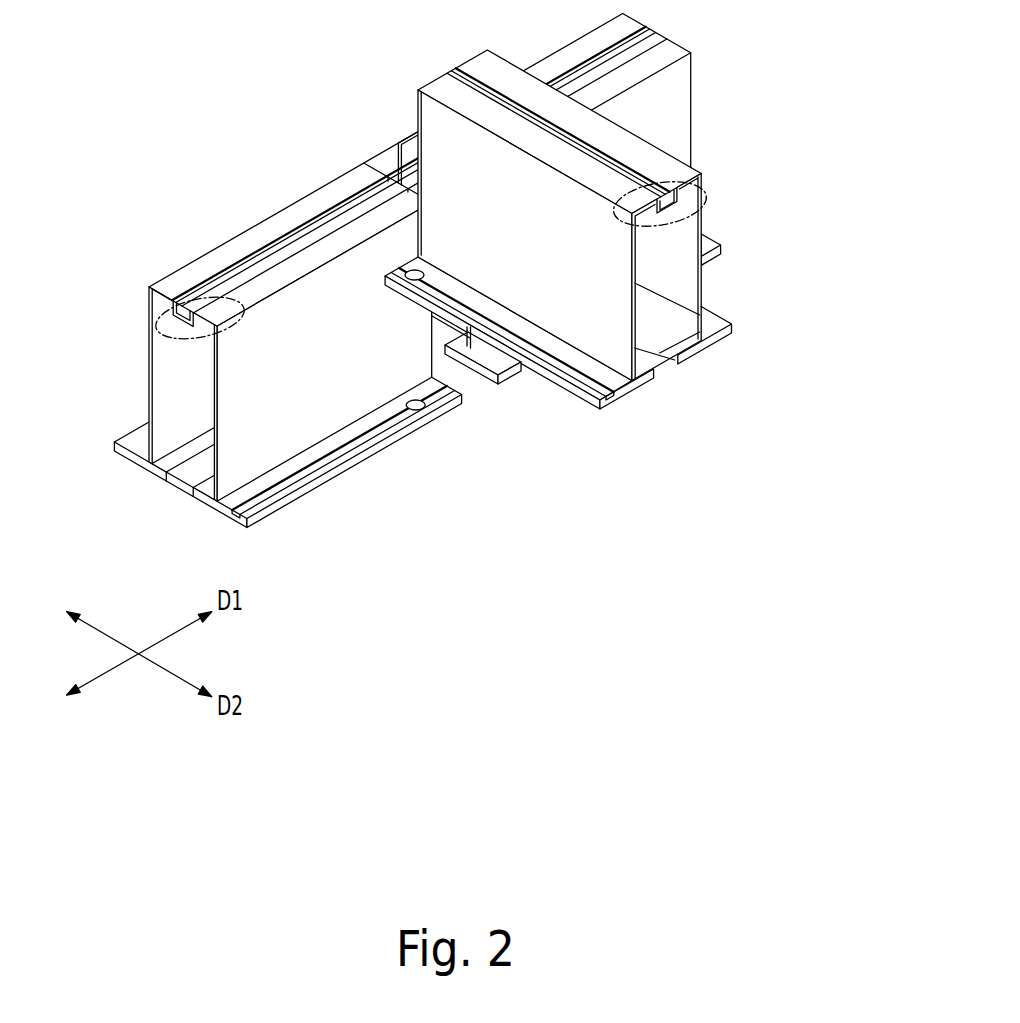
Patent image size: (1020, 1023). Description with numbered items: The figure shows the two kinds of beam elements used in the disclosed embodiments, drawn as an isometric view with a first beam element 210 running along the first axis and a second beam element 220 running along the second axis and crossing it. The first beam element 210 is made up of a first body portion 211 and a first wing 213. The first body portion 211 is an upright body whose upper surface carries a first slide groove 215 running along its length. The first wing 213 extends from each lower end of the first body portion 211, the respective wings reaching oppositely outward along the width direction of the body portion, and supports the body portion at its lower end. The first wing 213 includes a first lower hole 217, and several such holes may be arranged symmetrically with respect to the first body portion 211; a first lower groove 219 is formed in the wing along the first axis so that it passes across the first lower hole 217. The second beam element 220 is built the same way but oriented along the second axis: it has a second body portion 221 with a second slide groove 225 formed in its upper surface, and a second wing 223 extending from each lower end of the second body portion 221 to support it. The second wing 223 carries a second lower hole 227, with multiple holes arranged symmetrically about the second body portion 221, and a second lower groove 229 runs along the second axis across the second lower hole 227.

The first beam element 210 is at (380, 305).
The first body portion 211 is at (257, 240).
The first wing 213 is at (287, 496).
The first slide groove 215 is at (180, 296).
The first lower hole 217 is at (421, 415).
The first lower groove 219 is at (357, 441).
The second beam element 220 is at (604, 288).
The second body portion 221 is at (648, 167).
The second wing 223 is at (587, 386).
The second slide groove 225 is at (708, 203).
The second lower hole 227 is at (415, 268).
The second lower groove 229 is at (557, 366).